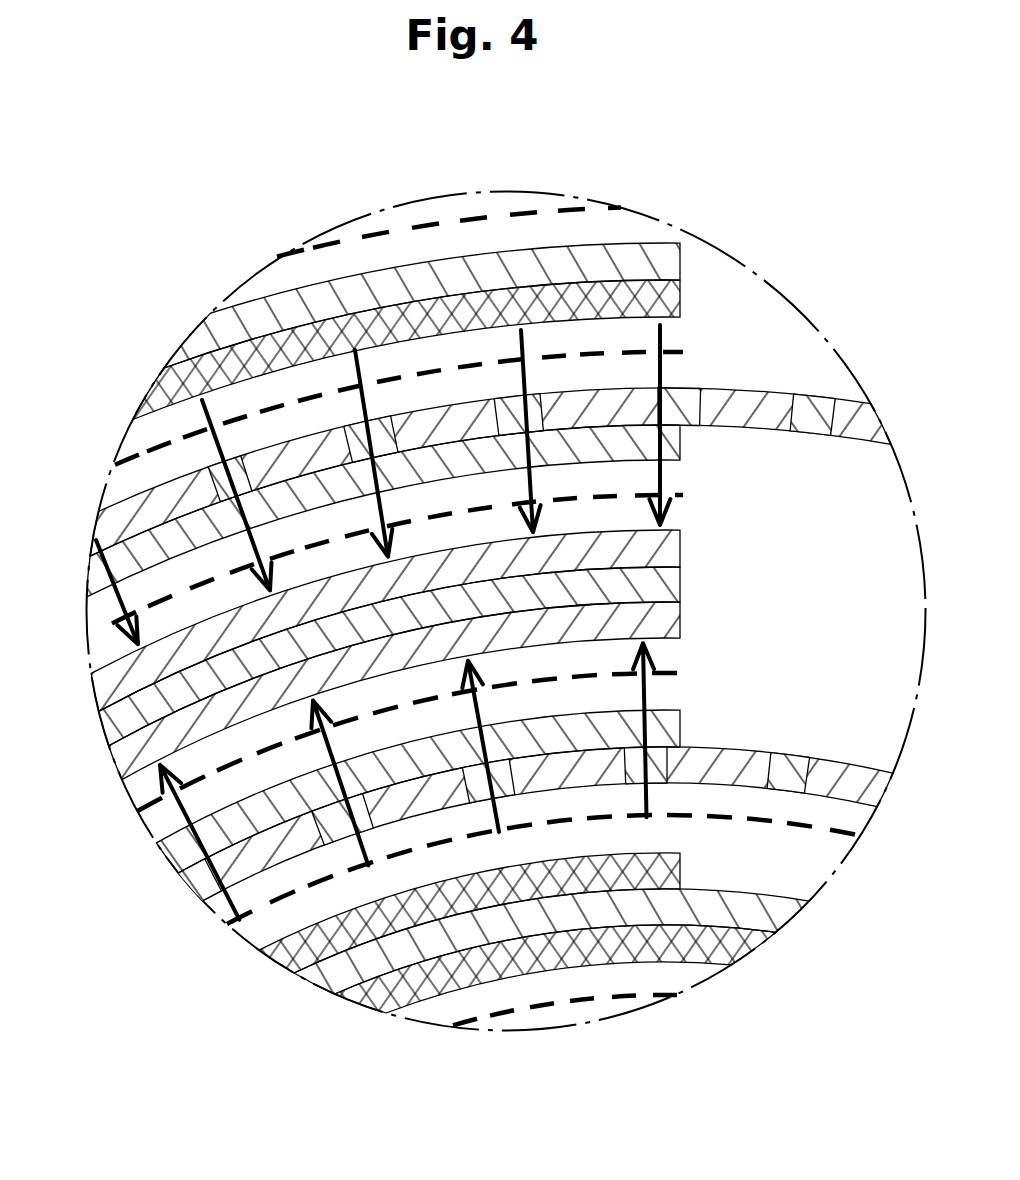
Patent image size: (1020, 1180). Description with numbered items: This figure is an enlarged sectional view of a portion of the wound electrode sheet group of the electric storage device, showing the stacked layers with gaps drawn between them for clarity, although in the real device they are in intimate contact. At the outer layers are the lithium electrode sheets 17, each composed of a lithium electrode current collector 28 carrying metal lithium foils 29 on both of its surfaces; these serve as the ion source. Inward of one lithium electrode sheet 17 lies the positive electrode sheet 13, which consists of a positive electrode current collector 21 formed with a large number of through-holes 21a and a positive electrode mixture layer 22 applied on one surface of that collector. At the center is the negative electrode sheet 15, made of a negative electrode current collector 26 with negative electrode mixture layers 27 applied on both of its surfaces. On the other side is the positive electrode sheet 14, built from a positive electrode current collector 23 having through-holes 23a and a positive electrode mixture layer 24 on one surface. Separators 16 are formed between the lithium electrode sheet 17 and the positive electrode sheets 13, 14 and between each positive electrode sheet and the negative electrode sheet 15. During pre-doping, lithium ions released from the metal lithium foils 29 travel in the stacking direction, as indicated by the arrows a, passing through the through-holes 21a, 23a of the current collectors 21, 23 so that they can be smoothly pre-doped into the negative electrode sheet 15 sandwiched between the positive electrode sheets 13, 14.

The positive electrode sheet 13 is at (489, 464).
The positive electrode sheet 14 is at (524, 791).
The negative electrode sheet 15 is at (441, 655).
The separator 16 is at (466, 212).
The lithium electrode sheet 17 is at (502, 636).
The positive electrode current collector 21 is at (738, 414).
The through-hole 21a is at (235, 465).
The positive electrode mixture layer 22 is at (677, 445).
The positive electrode current collector 23 is at (737, 765).
The through-hole 23a is at (355, 830).
The positive electrode mixture layer 24 is at (667, 733).
The negative electrode current collector 26 is at (650, 588).
The negative electrode mixture layer 27 is at (660, 550).
The lithium electrode current collector 28 is at (700, 263).
The metal lithium foil 29 is at (693, 302).
The arrow a is at (389, 622).